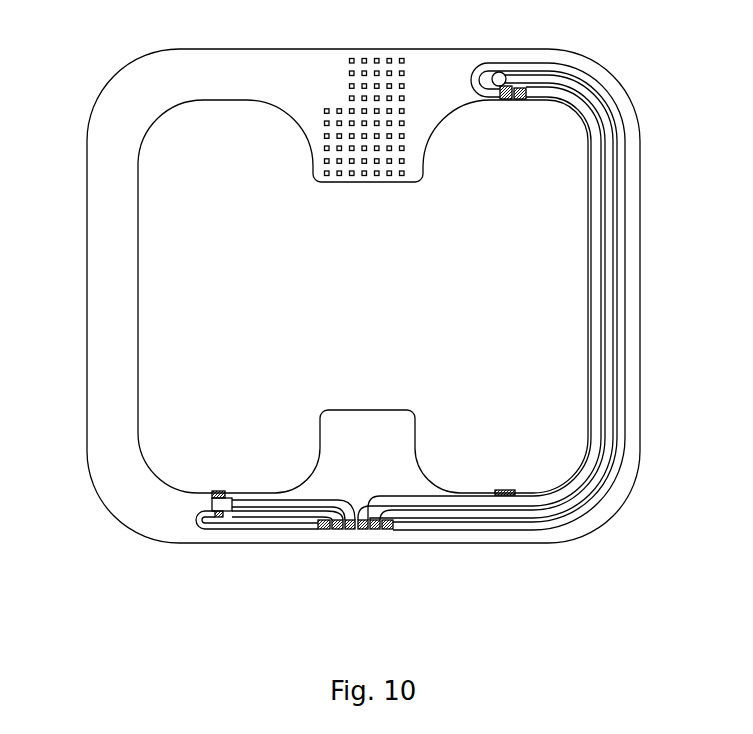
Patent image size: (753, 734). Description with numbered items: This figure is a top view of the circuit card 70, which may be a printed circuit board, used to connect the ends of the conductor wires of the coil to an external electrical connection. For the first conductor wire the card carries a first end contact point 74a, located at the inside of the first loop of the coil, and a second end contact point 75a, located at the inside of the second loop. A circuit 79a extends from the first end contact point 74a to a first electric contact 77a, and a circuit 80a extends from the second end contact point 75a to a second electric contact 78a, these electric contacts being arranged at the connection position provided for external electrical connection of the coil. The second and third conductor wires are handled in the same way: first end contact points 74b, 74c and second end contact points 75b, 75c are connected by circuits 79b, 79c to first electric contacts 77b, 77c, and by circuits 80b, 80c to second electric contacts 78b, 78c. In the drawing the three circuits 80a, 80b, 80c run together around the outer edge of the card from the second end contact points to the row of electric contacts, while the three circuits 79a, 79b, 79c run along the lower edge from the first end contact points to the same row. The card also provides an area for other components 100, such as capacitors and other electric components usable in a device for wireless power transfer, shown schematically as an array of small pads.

The circuit card 70 is at (122, 288).
The other components 100 is at (366, 55).
The first end contact point 74a is at (213, 492).
The first end contact point 74b is at (233, 502).
The first end contact point 74c is at (213, 518).
The second end contact point 75a is at (504, 100).
The second end contact point 75b is at (523, 100).
The second end contact point 75c is at (501, 70).
The first electric contact 77a is at (324, 530).
The first electric contact 77b is at (350, 530).
The first electric contact 77c is at (338, 530).
The second electric contact 78a is at (388, 530).
The second electric contact 78b is at (363, 530).
The second electric contact 78c is at (375, 530).
The circuit 79a is at (196, 526).
The circuit 79b is at (266, 499).
The circuit 79c is at (280, 517).
The circuit 80a is at (598, 92).
The circuit 80b is at (580, 481).
The circuit 80c is at (609, 288).